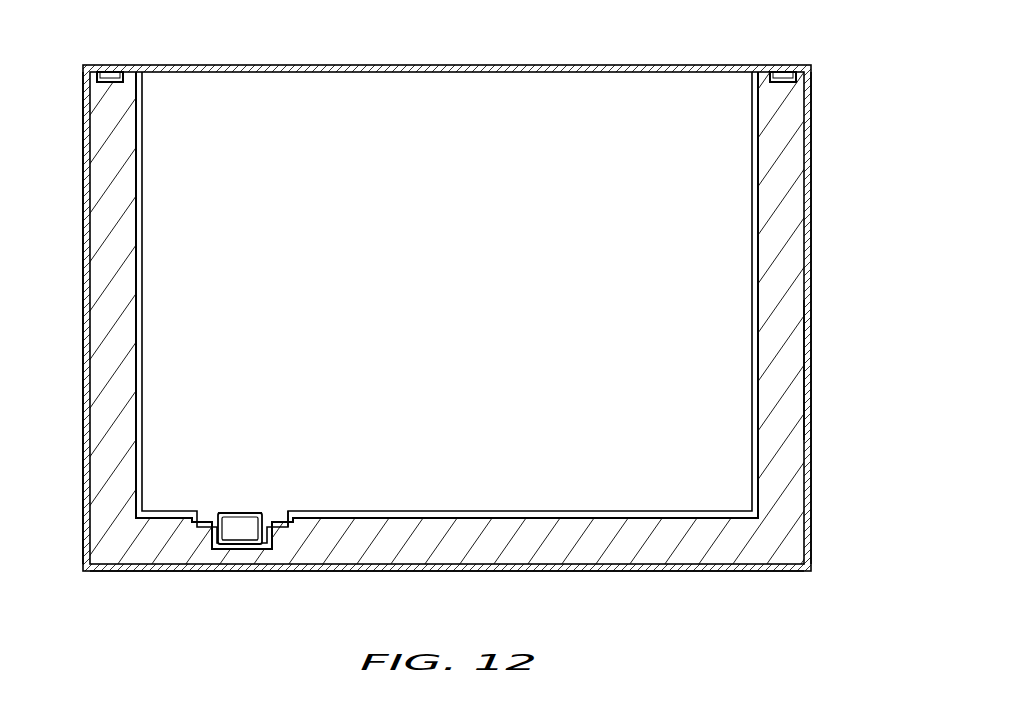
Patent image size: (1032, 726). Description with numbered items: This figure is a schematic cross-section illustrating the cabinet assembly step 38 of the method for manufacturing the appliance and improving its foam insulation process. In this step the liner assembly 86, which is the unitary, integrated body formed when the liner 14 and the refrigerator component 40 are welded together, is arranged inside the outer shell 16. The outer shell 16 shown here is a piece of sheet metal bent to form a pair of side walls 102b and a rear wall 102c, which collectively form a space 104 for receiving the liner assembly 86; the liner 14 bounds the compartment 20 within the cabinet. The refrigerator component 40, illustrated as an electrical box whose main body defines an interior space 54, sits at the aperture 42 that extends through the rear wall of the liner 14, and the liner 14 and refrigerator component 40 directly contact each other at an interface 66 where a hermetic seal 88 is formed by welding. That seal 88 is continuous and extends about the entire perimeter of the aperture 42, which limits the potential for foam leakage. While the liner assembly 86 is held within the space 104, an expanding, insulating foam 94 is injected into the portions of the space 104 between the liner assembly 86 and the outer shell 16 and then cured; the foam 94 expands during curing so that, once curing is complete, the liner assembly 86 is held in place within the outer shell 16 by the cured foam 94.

The cabinet assembly step 38 is at (516, 327).
The insulating cavity 20 is at (265, 133).
The liner 14 is at (136, 183).
The outer shell 16 is at (812, 162).
The space 104 is at (788, 243).
The liner assembly 86 is at (136, 320).
The insulating foam 94 is at (790, 368).
The side walls 102b is at (84, 456).
The rear wall 102c is at (703, 572).
The aperture 42 is at (237, 507).
The interface 66 is at (281, 510).
The hermetic seal 88 is at (339, 467).
The refrigerator component 40 is at (233, 550).
The interior space 54 is at (256, 541).